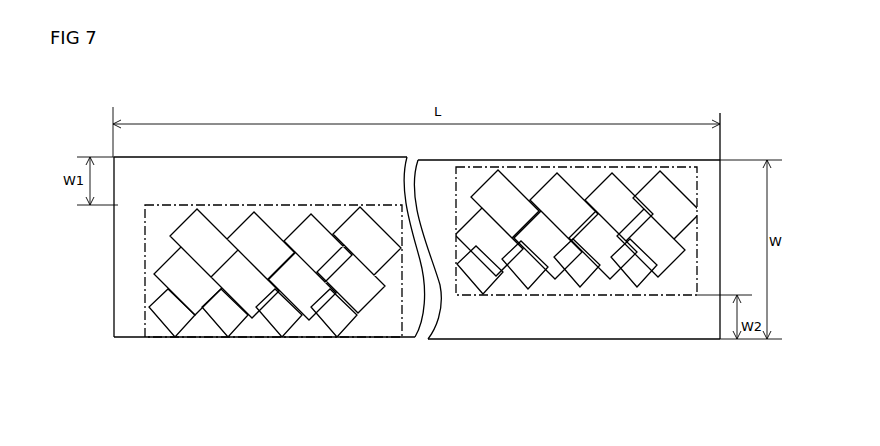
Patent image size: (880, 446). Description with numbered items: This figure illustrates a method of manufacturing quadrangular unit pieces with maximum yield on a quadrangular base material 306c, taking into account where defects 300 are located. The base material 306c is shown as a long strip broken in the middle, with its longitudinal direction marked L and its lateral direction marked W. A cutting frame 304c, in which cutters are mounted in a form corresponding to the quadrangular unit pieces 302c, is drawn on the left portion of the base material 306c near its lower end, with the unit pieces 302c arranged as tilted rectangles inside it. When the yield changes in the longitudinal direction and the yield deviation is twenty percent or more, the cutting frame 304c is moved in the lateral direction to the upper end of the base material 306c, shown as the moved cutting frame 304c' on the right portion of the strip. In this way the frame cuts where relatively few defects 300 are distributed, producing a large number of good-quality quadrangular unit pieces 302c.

The defects 300 is at (285, 167).
The quadrangular unit pieces 302c is at (342, 322).
The cutting frame 304c is at (274, 303).
The cutting frame (moved position) 304c' is at (578, 279).
The quadrangular base material 306c is at (575, 315).